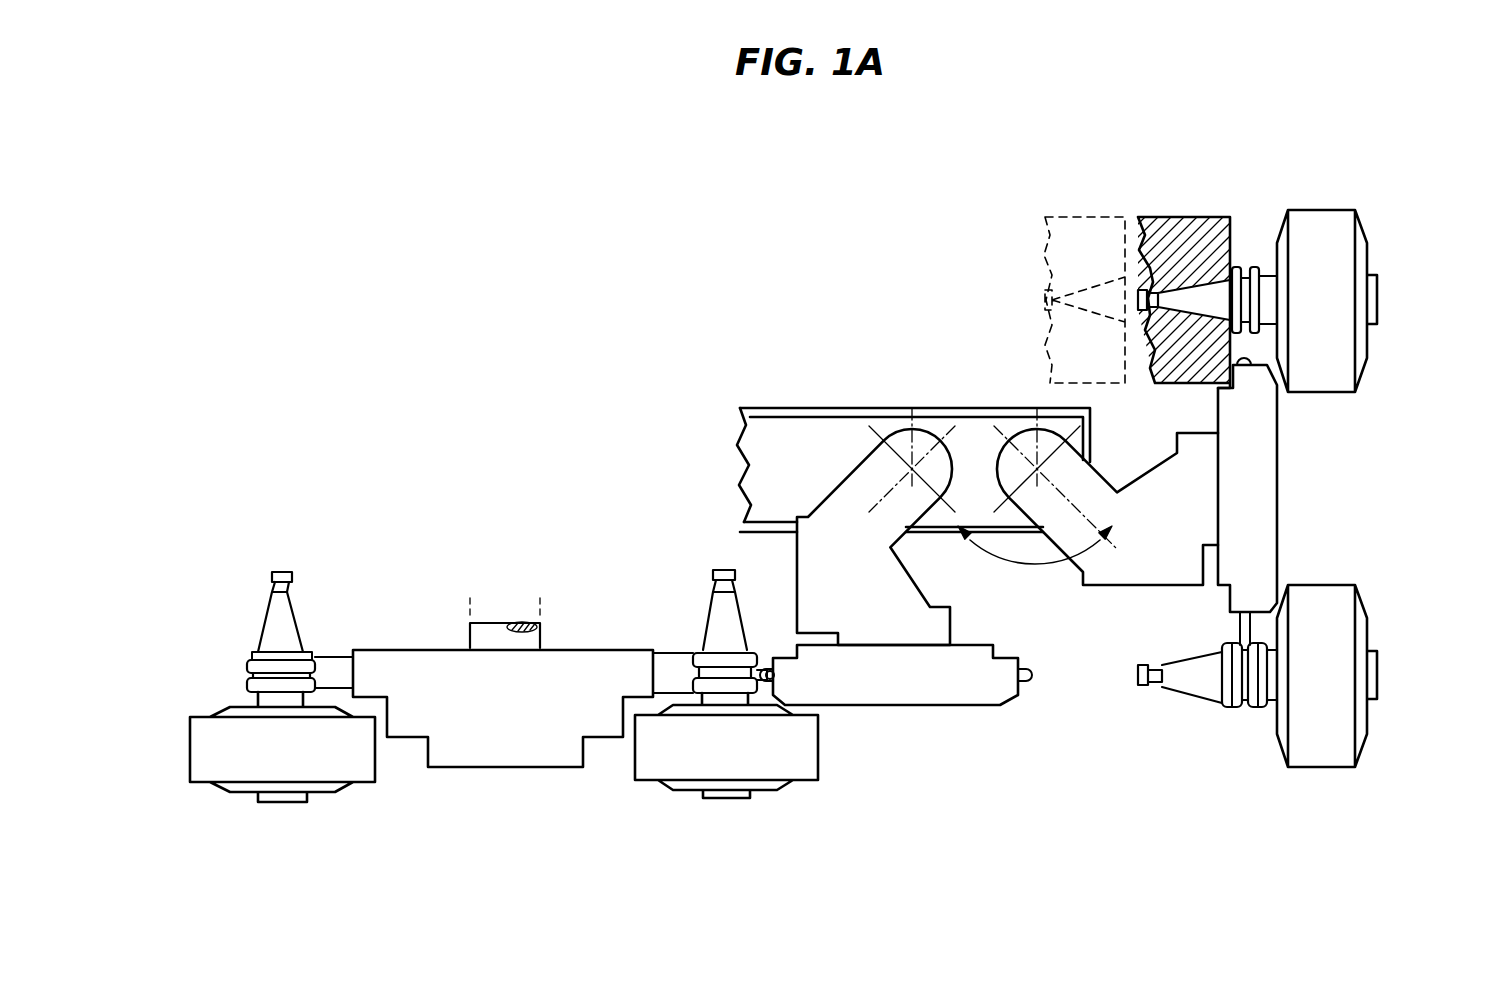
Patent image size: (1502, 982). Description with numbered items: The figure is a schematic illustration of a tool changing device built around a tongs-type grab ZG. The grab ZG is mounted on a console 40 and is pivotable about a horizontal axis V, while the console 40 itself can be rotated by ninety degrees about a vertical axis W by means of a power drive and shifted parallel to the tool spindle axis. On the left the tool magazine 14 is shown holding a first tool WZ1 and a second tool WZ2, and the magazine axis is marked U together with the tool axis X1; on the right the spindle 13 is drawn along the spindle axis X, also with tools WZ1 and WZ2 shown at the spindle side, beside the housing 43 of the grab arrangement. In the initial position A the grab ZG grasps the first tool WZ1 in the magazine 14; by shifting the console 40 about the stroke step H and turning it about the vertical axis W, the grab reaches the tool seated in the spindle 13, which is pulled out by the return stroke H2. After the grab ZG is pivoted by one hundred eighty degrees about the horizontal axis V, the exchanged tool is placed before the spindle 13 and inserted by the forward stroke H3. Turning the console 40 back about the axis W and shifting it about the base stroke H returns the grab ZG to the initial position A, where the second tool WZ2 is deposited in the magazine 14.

The spindle 13 is at (1203, 225).
The tool magazine 14 is at (503, 725).
The console 40 is at (818, 574).
The tool carrier housing 43 is at (789, 408).
The first tool WZ1 is at (1343, 595).
The second tool WZ2 is at (1345, 218).
The tongs-type grab ZG is at (967, 693).
The vertical axis W is at (1022, 437).
The initial position A is at (871, 710).
The horizontal axis V is at (895, 873).
The X axis X is at (1010, 300).
The U axis U is at (505, 530).
The X1 axis X1 is at (725, 548).
The stroke step H is at (1037, 408).
The return stroke H2 is at (1230, 217).
The forward stroke H3 is at (1230, 175).